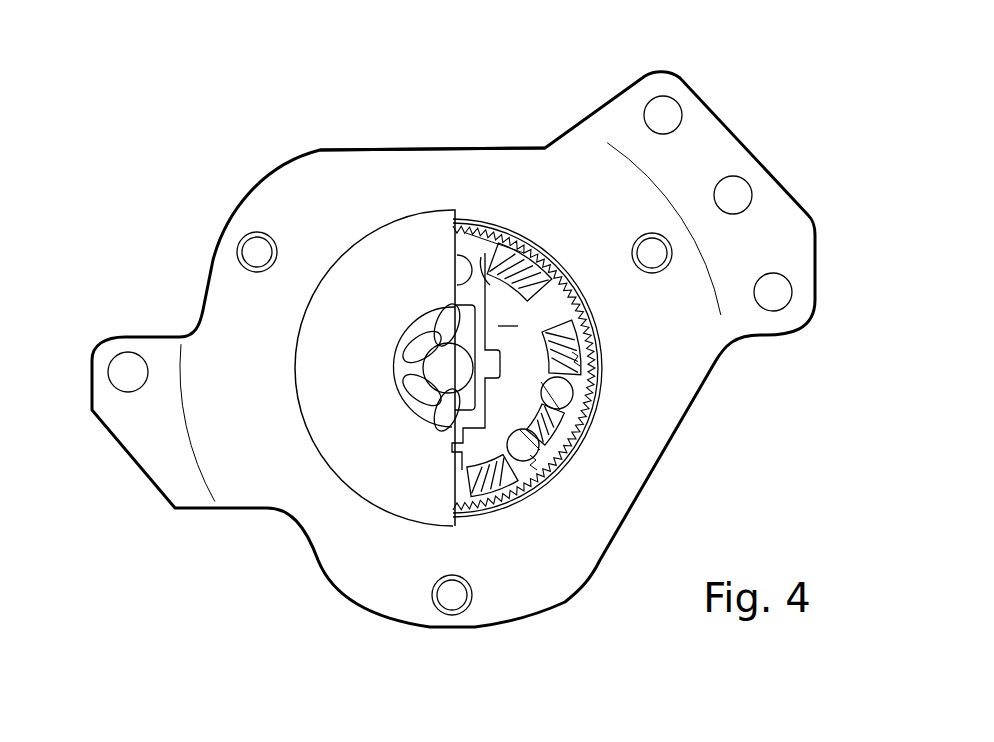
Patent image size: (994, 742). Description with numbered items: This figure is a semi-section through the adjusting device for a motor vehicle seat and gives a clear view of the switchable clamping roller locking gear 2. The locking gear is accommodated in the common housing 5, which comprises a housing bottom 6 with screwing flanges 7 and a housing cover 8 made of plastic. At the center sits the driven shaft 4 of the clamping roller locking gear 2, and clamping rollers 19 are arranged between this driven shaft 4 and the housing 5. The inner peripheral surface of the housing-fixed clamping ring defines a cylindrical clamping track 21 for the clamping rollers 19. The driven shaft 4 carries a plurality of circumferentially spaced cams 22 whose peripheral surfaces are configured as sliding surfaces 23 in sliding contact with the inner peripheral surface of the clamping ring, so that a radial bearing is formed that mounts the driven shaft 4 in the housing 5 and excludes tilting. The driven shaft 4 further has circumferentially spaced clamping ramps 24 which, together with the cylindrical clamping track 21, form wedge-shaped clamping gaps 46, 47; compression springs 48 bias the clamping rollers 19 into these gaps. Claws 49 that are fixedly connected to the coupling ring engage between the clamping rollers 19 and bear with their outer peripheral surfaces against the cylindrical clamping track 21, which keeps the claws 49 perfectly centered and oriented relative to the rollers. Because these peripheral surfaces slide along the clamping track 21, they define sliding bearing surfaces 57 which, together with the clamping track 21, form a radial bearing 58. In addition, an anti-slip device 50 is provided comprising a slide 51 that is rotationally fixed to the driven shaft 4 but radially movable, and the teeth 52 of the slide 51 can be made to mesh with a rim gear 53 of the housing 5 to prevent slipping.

The switchable clamping roller locking gear 2 is at (487, 490).
The driven shaft 4 is at (425, 372).
The housing 5 is at (548, 132).
The housing bottom 6 is at (712, 135).
The screwing flanges 7 is at (453, 342).
The housing cover 8 is at (385, 252).
The clamping rollers 19 is at (572, 400).
The cylindrical clamping track 21 is at (565, 300).
The cams 22 is at (555, 320).
The sliding surfaces 23 is at (576, 368).
The clamping ramps 24 is at (558, 393).
The wedge-shaped clamping gap 46 is at (527, 457).
The wedge-shaped clamping gap 47 is at (548, 430).
The compression springs 48 is at (553, 455).
The claws 49 is at (575, 358).
The anti-slip device 50 is at (515, 229).
The slide 51 is at (487, 243).
The teeth 52 is at (490, 229).
The rim gear 53 is at (508, 238).
The sliding bearing surfaces 57 is at (534, 505).
The radial bearing 58 is at (512, 467).